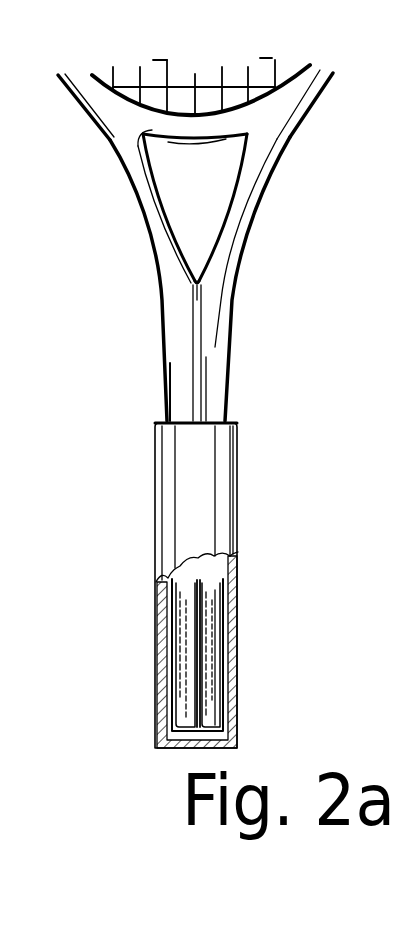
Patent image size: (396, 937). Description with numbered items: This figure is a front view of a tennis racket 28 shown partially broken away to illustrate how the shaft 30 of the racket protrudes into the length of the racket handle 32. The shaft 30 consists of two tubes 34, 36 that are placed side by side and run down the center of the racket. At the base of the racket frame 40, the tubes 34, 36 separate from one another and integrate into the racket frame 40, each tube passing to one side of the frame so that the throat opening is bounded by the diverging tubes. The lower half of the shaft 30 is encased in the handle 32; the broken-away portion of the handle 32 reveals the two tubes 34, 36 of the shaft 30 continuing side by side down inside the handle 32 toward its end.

The tennis racket 28 is at (155, 403).
The shaft 30 is at (198, 349).
The racket handle 32 is at (220, 485).
The tube 34 is at (167, 262).
The tube 36 is at (227, 233).
The racket frame 40 is at (103, 103).